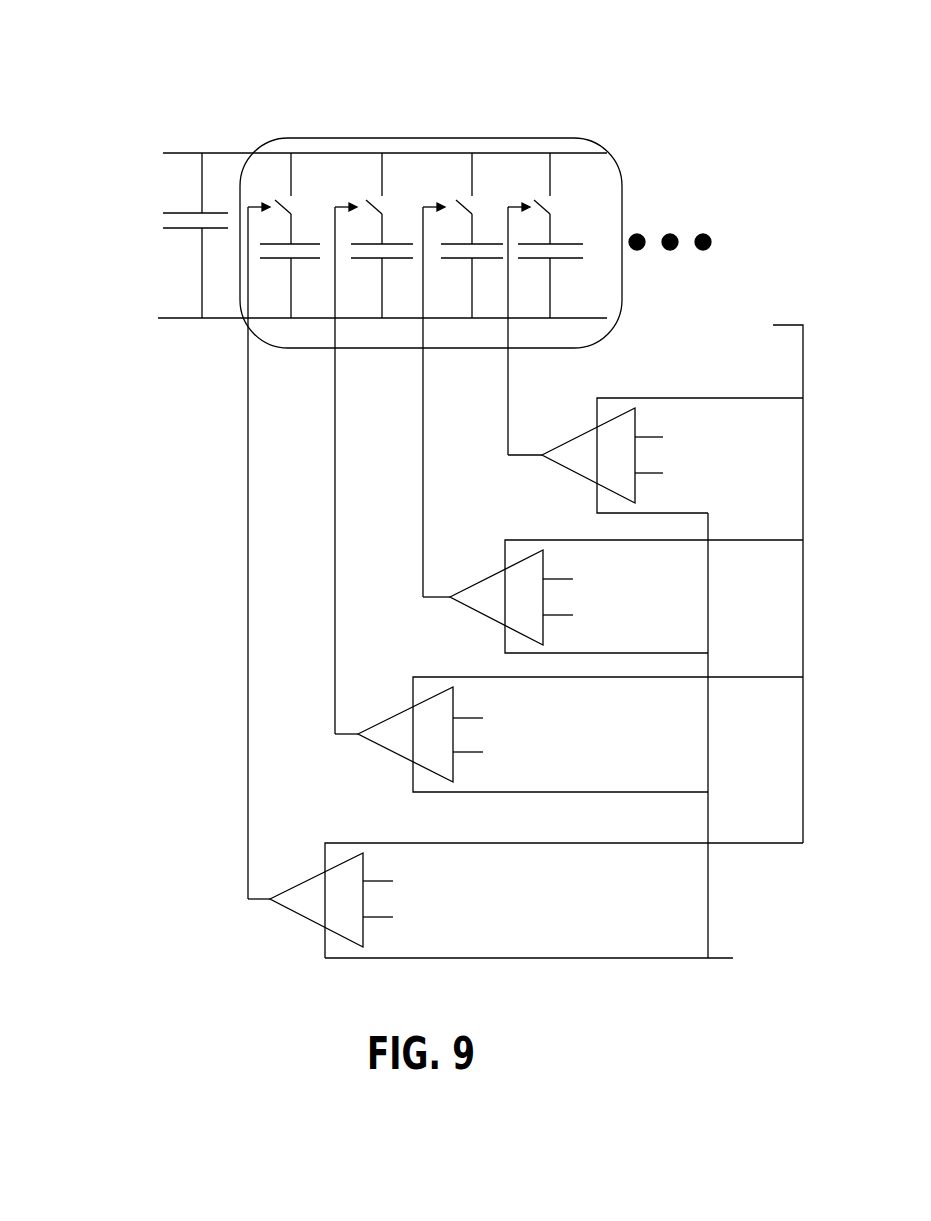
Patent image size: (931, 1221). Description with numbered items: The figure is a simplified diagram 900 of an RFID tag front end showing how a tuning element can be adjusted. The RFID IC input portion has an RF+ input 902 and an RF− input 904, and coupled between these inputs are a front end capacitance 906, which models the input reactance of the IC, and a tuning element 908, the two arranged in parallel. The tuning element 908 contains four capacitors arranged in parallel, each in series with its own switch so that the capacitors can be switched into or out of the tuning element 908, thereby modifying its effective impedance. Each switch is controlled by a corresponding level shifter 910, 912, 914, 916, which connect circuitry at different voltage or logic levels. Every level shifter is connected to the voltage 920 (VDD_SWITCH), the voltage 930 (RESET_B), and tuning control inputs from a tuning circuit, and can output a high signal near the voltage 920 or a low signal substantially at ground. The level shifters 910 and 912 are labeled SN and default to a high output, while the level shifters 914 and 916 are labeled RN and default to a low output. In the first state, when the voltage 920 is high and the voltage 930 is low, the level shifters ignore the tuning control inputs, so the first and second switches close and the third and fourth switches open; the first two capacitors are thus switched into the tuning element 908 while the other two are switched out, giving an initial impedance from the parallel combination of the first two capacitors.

The simplified diagram 900 is at (743, 68).
The RF+ input 902 is at (90, 165).
The RF− input 904 is at (100, 318).
The front end capacitance 906 is at (107, 213).
The tuning element 908 is at (335, 126).
The level shifter 910 is at (313, 920).
The level shifter 912 is at (397, 757).
The level shifter 914 is at (480, 610).
The level shifter 916 is at (563, 467).
The voltage 920 is at (725, 311).
The voltage 930 is at (800, 946).